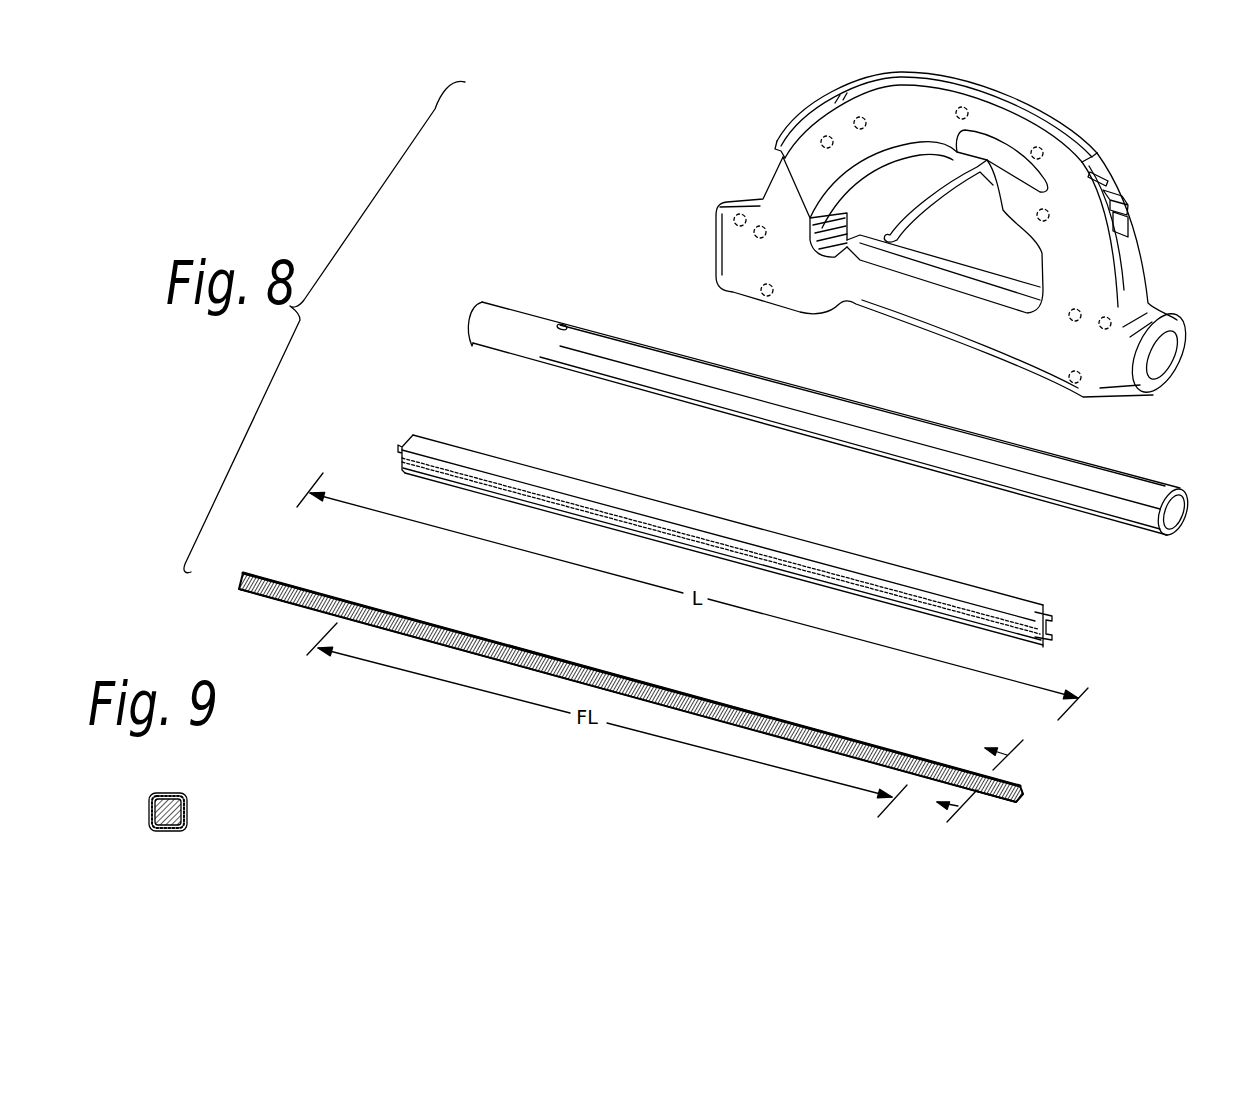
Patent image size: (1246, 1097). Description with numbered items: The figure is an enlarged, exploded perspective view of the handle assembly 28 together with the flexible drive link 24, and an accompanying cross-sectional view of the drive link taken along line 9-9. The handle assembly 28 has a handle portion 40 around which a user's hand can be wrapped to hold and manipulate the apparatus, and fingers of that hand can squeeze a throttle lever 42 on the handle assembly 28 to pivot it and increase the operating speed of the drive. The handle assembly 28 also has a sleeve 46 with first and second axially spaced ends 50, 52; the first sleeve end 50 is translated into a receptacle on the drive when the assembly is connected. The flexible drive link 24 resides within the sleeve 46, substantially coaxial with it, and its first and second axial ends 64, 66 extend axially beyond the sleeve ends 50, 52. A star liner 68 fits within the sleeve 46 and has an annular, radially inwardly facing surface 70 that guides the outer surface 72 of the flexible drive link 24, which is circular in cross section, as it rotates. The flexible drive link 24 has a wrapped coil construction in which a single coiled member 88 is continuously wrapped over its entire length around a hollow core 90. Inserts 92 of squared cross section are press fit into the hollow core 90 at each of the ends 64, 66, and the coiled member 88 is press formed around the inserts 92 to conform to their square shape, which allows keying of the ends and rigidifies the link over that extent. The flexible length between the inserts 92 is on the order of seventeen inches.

In FIG. 8, the handle assembly 28 is at (1112, 128).
In FIG. 8, the handle portion 40 is at (967, 82).
In FIG. 8, the throttle lever 42 is at (940, 190).
In FIG. 8, the sleeve 46 is at (875, 410).
In FIG. 8, the first sleeve end 50 is at (468, 352).
In FIG. 8, the second sleeve end 52 is at (1147, 495).
In FIG. 8, the star liner 68 is at (850, 552).
In FIG. 8, the radially inwardly facing surface 70 is at (1047, 632).
In FIG. 8, the flexible drive link 24 is at (825, 733).
In FIG. 8, the first axial end 64 is at (278, 578).
In FIG. 8, the second axial end 66 is at (1018, 790).
In FIG. 8, the coiled member 88 is at (534, 652).
In FIG. 9, the coiled member 88 is at (165, 797).
In FIG. 8, the hollow core 90 is at (653, 685).
In FIG. 8, the outer surface 72 is at (745, 711).
In FIG. 8, the inserts 92 is at (322, 583).
In FIG. 9, the inserts 92 is at (190, 806).
In FIG. 8, the section line 9- 9 is at (985, 782).